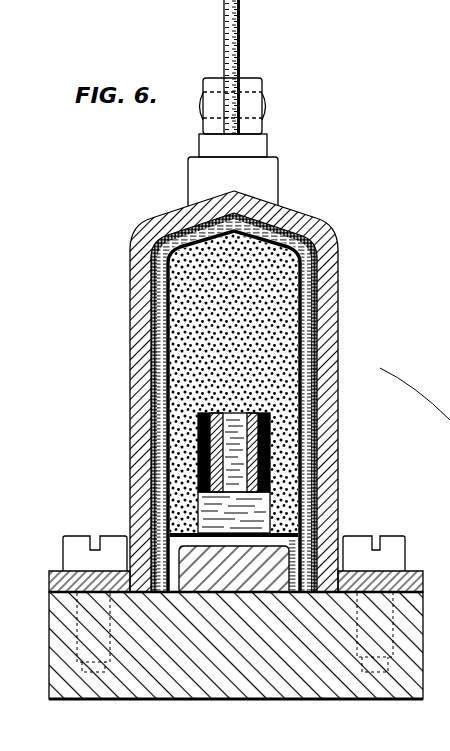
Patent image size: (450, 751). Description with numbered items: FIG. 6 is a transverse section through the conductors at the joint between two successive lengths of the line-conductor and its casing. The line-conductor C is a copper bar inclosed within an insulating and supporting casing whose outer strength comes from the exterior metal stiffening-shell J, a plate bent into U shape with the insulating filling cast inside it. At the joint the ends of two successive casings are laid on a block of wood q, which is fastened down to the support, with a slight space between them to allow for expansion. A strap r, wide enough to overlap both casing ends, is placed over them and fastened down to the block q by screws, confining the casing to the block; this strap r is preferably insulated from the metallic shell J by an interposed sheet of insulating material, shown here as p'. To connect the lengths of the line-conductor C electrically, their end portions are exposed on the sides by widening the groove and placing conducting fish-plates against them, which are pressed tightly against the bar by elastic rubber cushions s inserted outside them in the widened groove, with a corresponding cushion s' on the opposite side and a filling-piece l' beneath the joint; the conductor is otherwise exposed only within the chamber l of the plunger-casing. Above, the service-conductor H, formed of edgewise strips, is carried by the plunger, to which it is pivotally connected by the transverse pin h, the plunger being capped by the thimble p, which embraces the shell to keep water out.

The service-conductor H is at (241, 26).
The transverse pin h is at (267, 106).
The thimble p is at (233, 170).
The lining layer p' is at (208, 402).
The strap r is at (132, 427).
The cushion s is at (210, 405).
The inner vessel lining s' is at (291, 510).
The exterior metal stiffening-shell J is at (323, 437).
The line-conductor C is at (234, 452).
The chamber l is at (234, 452).
The liquid l' is at (234, 512).
The block of wood q is at (50, 646).